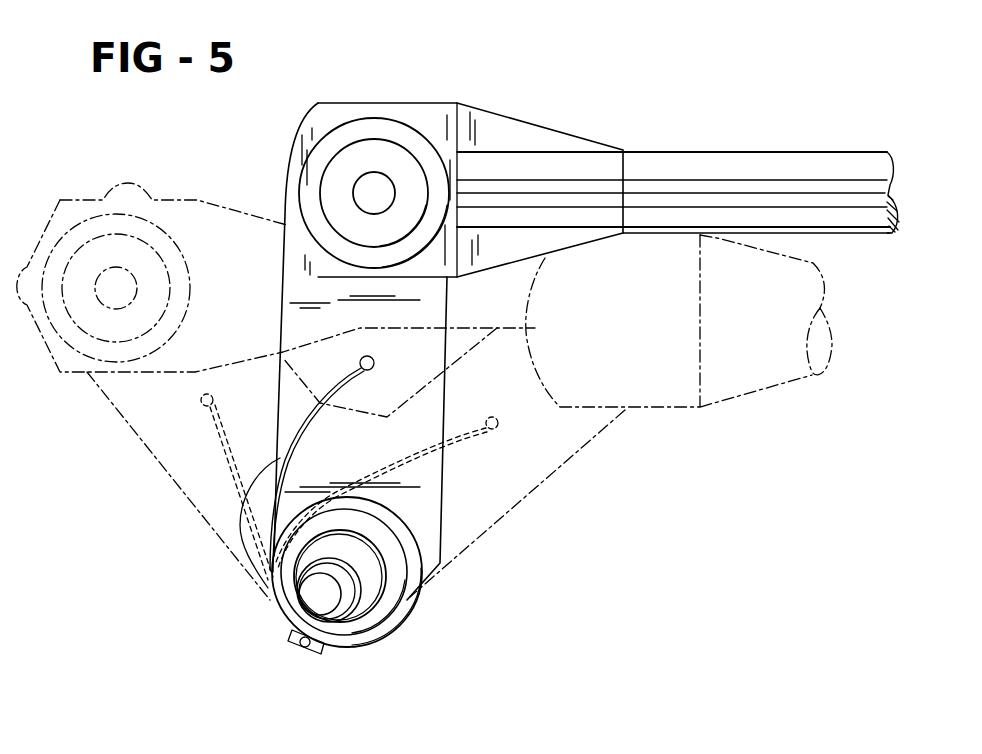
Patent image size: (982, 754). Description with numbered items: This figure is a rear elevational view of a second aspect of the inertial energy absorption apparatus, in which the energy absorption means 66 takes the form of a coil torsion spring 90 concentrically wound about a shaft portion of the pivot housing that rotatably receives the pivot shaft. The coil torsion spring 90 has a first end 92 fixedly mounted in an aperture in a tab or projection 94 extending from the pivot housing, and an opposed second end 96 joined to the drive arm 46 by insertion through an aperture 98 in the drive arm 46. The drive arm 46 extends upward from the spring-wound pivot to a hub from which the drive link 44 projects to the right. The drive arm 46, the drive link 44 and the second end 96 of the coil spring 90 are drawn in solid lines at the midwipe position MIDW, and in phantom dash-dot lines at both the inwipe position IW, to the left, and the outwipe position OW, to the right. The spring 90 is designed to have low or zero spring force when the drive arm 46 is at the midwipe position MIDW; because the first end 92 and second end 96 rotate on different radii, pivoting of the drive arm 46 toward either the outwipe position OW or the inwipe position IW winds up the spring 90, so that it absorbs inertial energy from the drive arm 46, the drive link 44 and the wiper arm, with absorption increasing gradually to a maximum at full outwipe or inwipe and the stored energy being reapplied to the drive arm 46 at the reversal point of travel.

The drive link 44 is at (688, 165).
The drive arm 46 is at (430, 500).
The energy absorption means 66 is at (282, 408).
The coil torsion spring 90 is at (400, 620).
The first end 92 is at (317, 654).
The tab or projection 94 is at (298, 643).
The second end 96 is at (262, 523).
The aperture 98 is at (374, 364).
The inwipe position IW is at (108, 394).
The outwipe position OW is at (627, 408).
The midwipe position MIDW is at (362, 103).